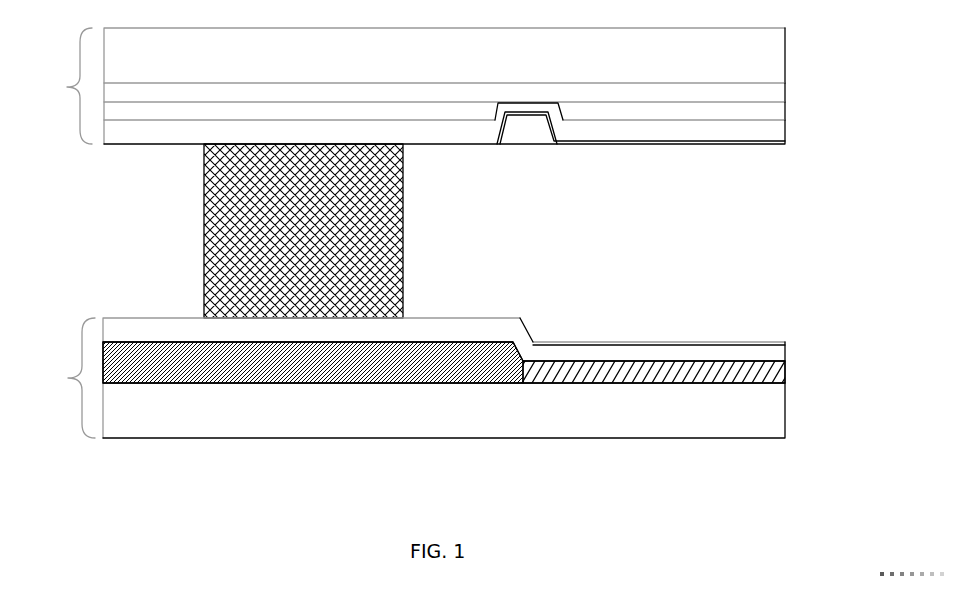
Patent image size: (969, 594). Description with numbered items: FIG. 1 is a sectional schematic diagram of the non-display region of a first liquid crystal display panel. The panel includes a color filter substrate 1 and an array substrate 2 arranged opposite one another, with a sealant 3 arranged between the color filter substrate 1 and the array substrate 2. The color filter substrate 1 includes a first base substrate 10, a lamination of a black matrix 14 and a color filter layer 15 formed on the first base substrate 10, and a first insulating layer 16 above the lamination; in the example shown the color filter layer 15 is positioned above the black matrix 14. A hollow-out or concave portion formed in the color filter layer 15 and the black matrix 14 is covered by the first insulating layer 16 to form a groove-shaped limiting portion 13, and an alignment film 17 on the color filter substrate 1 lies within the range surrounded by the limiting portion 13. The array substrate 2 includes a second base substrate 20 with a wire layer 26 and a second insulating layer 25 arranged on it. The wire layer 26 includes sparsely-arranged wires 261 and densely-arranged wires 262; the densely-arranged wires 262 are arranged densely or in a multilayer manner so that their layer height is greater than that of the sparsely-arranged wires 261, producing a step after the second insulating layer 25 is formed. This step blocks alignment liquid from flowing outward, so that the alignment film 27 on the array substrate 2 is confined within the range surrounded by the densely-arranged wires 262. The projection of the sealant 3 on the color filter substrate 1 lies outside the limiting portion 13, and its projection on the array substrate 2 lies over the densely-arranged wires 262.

The color filter substrate 1 is at (66, 86).
The first base substrate 10 is at (786, 50).
The black matrix 14 is at (786, 92).
The color filter layer 15 is at (786, 110).
The first insulating layer 16 is at (786, 132).
The alignment film 17 is at (769, 146).
The limiting portion 13 is at (531, 134).
The sealant 3 is at (396, 229).
The array substrate 2 is at (66, 378).
The second base substrate 20 is at (786, 422).
The second insulating layer 25 is at (786, 355).
The wire layer 26 is at (408, 351).
The sparsely-arranged wires 261 is at (643, 369).
The densely-arranged wires 262 is at (163, 352).
The alignment film 27 is at (743, 339).